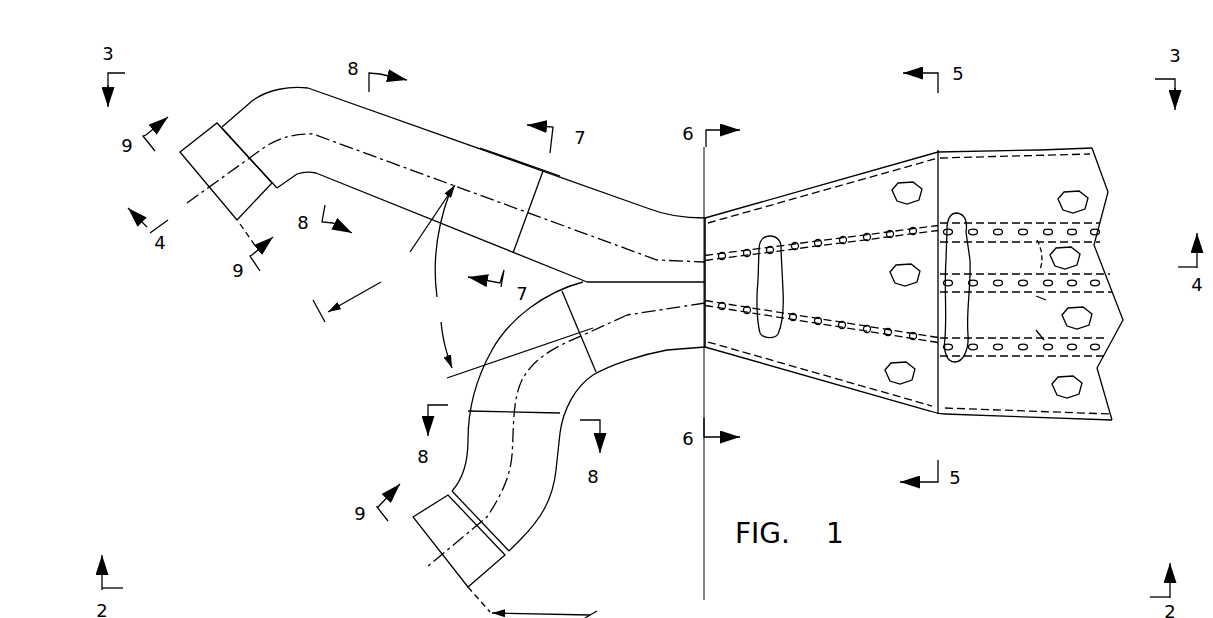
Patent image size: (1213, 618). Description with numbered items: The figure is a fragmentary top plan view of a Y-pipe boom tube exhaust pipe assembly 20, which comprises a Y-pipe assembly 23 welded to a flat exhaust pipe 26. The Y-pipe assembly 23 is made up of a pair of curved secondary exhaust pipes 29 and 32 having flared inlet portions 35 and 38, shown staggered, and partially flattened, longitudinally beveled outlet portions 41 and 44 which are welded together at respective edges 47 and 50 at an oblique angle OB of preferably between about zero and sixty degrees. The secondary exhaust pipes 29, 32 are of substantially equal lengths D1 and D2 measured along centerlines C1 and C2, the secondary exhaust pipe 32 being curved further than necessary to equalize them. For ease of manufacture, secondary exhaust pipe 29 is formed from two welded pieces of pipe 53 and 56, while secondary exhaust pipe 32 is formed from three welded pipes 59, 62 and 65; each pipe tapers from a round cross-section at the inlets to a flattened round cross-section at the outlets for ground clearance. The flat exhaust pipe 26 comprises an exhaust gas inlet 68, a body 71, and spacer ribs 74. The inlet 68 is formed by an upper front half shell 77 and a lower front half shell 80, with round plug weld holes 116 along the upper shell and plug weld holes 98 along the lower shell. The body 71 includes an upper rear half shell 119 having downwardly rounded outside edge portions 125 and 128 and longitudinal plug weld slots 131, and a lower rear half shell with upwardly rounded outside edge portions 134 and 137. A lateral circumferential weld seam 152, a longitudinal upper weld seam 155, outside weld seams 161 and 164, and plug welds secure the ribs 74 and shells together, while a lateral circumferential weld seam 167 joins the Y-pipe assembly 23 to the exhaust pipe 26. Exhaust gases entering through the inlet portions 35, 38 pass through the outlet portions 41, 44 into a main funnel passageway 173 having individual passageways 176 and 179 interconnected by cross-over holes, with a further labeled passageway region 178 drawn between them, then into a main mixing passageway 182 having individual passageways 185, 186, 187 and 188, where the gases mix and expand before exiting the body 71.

The Y-pipe boom tube exhaust pipe assembly 20 is at (993, 104).
The Y-pipe assembly 23 is at (611, 126).
The flat exhaust pipe 26 is at (1049, 88).
The secondary exhaust pipe 29 is at (436, 127).
The secondary exhaust pipe 32 is at (467, 395).
The flared inlet portion 35 is at (207, 127).
The flared inlet portion 38 is at (501, 569).
The beveled outlet portion 41 is at (637, 208).
The beveled outlet portion 44 is at (670, 351).
The edge 47 is at (640, 282).
The edge 50 is at (625, 284).
The pipe 53 is at (315, 90).
The pipe 56 is at (582, 183).
The pipe 59 is at (548, 511).
The pipe 62 is at (493, 343).
The pipe 65 is at (620, 364).
The exhaust gas inlet 68 is at (833, 181).
The body 71 is at (1056, 146).
The spacer ribs 74 is at (1032, 297).
The upper front half shell 77 is at (787, 192).
The lower front half shell 80 is at (822, 384).
The plug weld holes 98 is at (843, 237).
The plug weld holes 116 is at (867, 339).
The upper rear half shell 119 is at (1082, 176).
The outside edge portion 125 is at (1027, 148).
The outside edge portion 128 is at (1045, 419).
The plug weld slots 131 is at (998, 281).
The outside edge portion 134 is at (1083, 147).
The outside edge portion 137 is at (1094, 421).
The lateral circumferential weld seam 152 is at (940, 188).
The longitudinal upper weld seam 155 is at (807, 243).
The longitudinal outside weld seam 161 is at (982, 149).
The longitudinal outside weld seam 164 is at (987, 419).
The lateral circumferential weld seam 167 is at (706, 240).
The main funnel passageway 173 is at (773, 303).
The individual passageway 176 is at (907, 187).
The opening 178 is at (896, 272).
The individual passageway 179 is at (894, 381).
The main mixing passageway 182 is at (948, 312).
The individual passageway 185 is at (1088, 202).
The individual passageway 186 is at (1084, 257).
The individual passageway 187 is at (1097, 318).
The individual passageway 188 is at (1083, 387).
The centerline C1 is at (446, 198).
The centerline C2 is at (660, 302).
The length D1 is at (384, 253).
The length D2 is at (700, 593).
The oblique angle OB is at (509, 285).